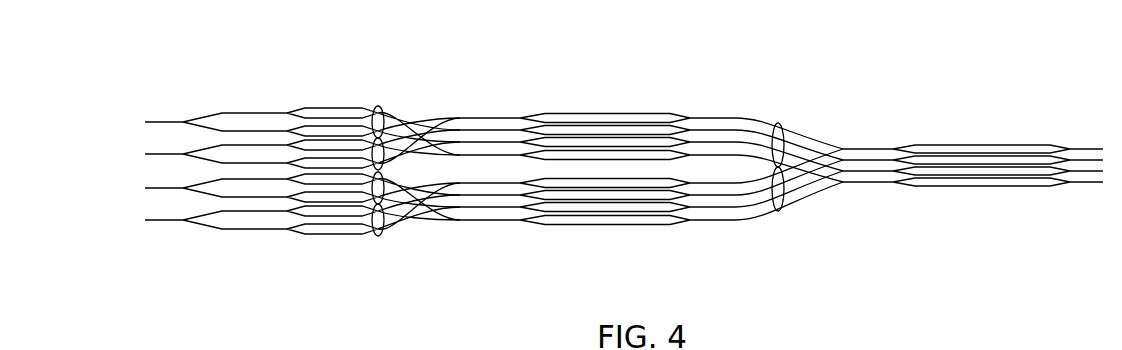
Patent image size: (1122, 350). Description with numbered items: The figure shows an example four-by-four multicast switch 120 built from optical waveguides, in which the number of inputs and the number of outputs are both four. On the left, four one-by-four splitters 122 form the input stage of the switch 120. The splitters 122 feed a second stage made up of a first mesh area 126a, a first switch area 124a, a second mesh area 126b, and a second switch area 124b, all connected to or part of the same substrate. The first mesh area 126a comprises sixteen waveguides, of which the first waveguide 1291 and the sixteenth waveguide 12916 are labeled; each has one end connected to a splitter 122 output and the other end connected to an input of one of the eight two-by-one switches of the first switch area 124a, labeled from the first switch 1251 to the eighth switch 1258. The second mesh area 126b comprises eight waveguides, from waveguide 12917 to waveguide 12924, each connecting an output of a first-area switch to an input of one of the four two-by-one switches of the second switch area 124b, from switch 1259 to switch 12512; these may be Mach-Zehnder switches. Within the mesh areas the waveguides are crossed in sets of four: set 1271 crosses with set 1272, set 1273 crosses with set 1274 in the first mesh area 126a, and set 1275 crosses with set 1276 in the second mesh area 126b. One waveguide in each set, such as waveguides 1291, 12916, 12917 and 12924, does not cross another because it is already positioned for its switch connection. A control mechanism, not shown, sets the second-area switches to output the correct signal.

The 4×4 multicast switch 120 is at (935, 97).
The 1×4 splitters 122 is at (255, 242).
The first switch area 124a is at (567, 235).
The second switch area 124b is at (972, 205).
The first mesh area 126a is at (348, 255).
The second mesh area 126b is at (770, 231).
The waveguide 1291 is at (335, 105).
The waveguide 12916 is at (322, 236).
The waveguide 12917 is at (718, 115).
The waveguide 12924 is at (720, 221).
The set of waveguides 1271 is at (378, 106).
The set of waveguides 1272 is at (384, 142).
The set of waveguides 1273 is at (385, 204).
The set of waveguides 1274 is at (378, 235).
The set of waveguides 1275 is at (777, 122).
The set of waveguides 1276 is at (781, 212).
The 2×1 switch 1251 is at (550, 114).
The 2×1 switch 1258 is at (628, 223).
The 2×1 switch 1259 is at (1023, 144).
The 2×1 switch 12512 is at (1013, 188).